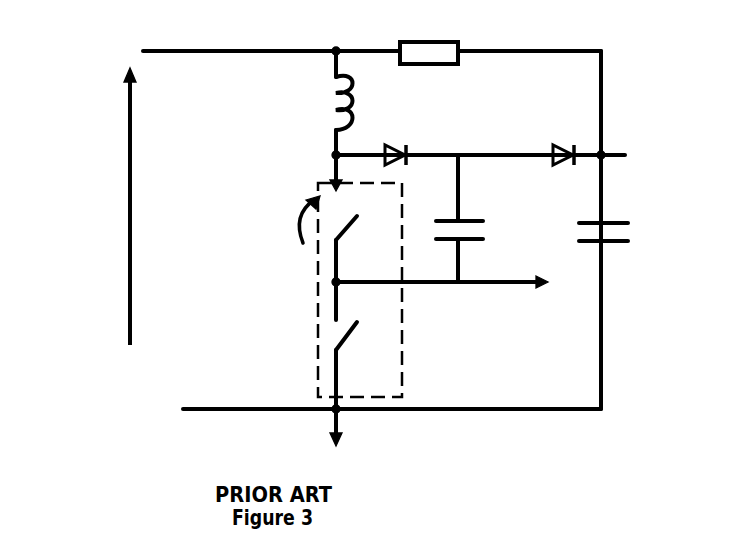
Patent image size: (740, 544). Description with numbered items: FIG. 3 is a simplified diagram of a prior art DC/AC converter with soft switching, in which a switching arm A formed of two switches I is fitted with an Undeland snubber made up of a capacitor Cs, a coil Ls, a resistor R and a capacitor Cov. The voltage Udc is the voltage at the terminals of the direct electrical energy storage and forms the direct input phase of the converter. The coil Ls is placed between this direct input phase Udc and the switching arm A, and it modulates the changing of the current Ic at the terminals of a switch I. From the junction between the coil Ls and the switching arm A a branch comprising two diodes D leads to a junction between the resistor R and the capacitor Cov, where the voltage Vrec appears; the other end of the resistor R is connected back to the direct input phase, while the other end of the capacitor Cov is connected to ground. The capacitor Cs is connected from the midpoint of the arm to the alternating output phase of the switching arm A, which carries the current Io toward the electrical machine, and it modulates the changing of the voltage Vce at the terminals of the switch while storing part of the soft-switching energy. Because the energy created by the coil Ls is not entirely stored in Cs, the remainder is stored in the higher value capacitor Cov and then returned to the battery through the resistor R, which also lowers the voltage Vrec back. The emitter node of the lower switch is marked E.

The resistor R is at (459, 63).
The coil Ls is at (320, 103).
The diodes D is at (361, 183).
The voltage Vrec is at (636, 140).
The capacitor Cs is at (482, 218).
The capacitor Cov is at (637, 232).
The current Io is at (442, 298).
The voltage Udc is at (148, 206).
The current Ic is at (317, 174).
The voltage Vce is at (278, 219).
The switching arm A is at (304, 392).
The switches I is at (345, 228).
The emitter E is at (322, 365).